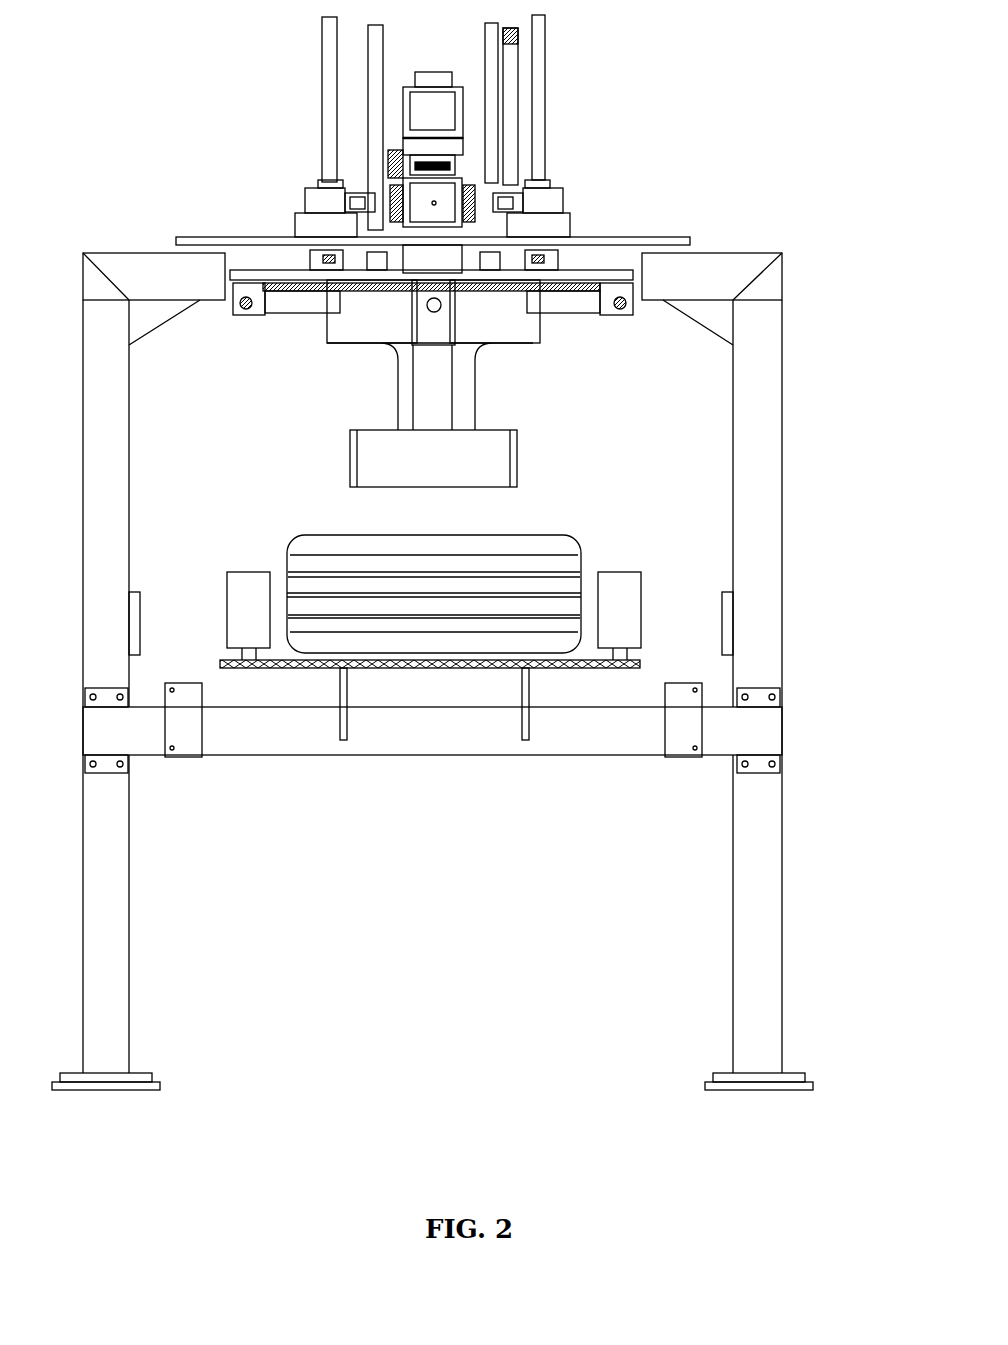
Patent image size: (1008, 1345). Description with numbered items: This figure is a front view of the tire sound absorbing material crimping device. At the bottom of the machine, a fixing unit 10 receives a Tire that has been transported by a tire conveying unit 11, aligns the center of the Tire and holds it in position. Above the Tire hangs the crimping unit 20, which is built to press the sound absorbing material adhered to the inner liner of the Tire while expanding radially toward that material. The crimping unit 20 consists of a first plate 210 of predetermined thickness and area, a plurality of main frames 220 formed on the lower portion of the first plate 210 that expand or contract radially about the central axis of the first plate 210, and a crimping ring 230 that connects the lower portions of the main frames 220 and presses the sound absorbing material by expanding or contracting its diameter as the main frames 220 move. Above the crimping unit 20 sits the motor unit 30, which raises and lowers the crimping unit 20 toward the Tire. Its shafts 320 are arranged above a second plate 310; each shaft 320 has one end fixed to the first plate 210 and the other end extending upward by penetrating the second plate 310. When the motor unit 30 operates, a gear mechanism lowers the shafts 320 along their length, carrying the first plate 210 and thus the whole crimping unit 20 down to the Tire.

The fixing unit 10 is at (590, 682).
The tire conveying unit 11 is at (452, 668).
The crimping unit 20 is at (503, 405).
The first plate 210 is at (640, 275).
The main frames 220 is at (400, 380).
The crimping ring 230 is at (353, 462).
The motor unit 30 is at (423, 118).
The second plate 310 is at (622, 245).
The shafts 320 is at (370, 60).
The tire Tire is at (555, 542).